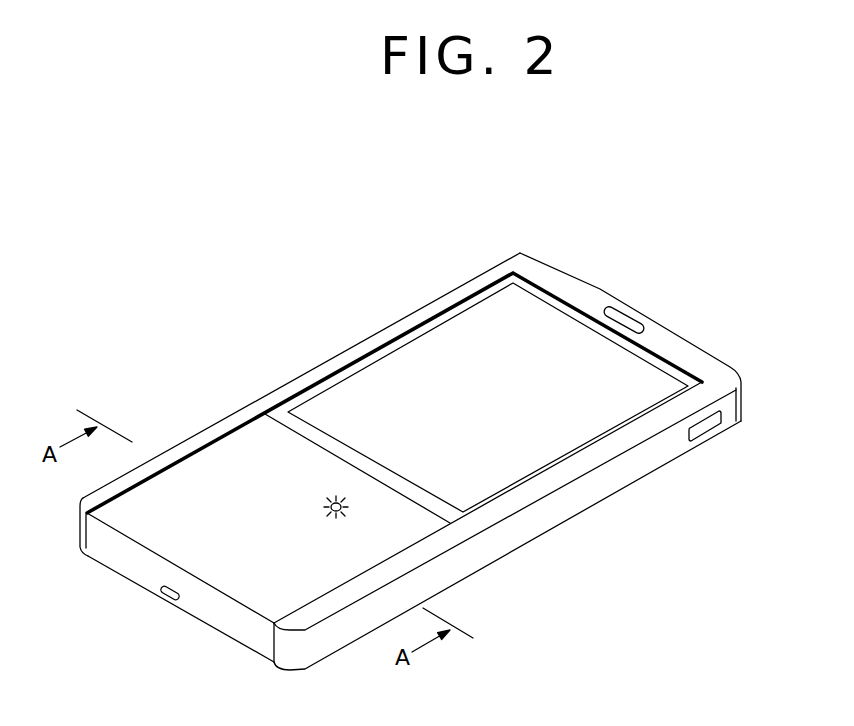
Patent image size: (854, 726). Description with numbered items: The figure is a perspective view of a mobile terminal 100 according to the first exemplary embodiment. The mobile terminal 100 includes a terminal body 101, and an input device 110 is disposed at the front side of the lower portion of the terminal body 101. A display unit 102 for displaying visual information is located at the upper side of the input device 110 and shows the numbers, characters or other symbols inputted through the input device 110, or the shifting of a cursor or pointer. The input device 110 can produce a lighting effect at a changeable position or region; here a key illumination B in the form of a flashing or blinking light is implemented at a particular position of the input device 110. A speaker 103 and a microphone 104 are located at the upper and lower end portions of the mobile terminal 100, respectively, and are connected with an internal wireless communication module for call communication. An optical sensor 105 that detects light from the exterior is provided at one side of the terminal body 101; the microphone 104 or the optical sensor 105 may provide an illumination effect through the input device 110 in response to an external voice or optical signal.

The mobile terminal 100 is at (437, 458).
The terminal body 101 is at (225, 630).
The display unit 102 is at (602, 360).
The speaker 103 is at (617, 310).
The microphone 104 is at (162, 592).
The optical sensor 105 is at (721, 416).
The input device 110 is at (272, 563).
The key illumination B is at (347, 509).